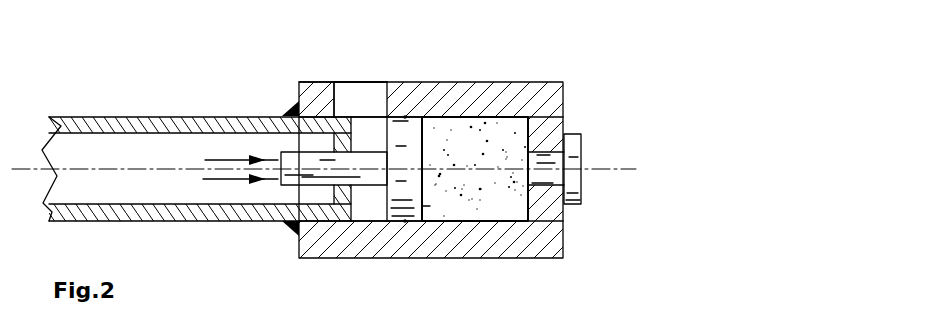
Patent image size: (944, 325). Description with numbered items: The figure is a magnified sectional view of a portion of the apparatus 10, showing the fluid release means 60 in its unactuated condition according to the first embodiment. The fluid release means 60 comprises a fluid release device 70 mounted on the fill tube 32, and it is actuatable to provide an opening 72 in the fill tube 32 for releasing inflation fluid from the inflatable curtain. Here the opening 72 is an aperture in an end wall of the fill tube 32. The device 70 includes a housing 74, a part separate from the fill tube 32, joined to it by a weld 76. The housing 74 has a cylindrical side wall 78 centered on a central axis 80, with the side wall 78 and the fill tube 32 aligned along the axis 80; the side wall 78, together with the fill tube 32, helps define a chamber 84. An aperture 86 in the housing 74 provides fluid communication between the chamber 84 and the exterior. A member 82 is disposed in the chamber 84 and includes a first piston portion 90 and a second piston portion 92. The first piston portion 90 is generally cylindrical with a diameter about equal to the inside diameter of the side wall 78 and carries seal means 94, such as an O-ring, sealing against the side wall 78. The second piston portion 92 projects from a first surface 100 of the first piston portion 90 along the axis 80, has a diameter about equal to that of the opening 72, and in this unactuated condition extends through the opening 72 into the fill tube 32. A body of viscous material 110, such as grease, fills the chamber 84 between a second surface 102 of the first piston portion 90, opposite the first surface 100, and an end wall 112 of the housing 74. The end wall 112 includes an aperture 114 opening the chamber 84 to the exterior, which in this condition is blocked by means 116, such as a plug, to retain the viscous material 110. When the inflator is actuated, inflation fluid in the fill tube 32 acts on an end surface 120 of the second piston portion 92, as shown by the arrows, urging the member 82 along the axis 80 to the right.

The apparatus 10 is at (690, 57).
The fill tube 32 is at (140, 116).
The fluid release means 60 is at (720, 85).
The fluid release device 70 is at (634, 36).
The opening 72 is at (335, 178).
The housing 74 is at (442, 100).
The weld 76 is at (292, 110).
The cylindrical side wall 78 is at (483, 102).
The central axis 80 is at (622, 171).
The member 82 is at (412, 135).
The chamber 84 is at (372, 208).
The aperture 86 is at (343, 79).
The first piston portion 90 is at (403, 192).
The second piston portion 92 is at (297, 174).
The seal means 94 is at (405, 224).
The first surface 100 is at (352, 100).
The second surface 102 is at (428, 206).
The viscous material 110 is at (495, 147).
The end wall 112 is at (543, 125).
The aperture 114 is at (548, 184).
The plug 116 is at (573, 157).
The end surface 120 is at (280, 152).